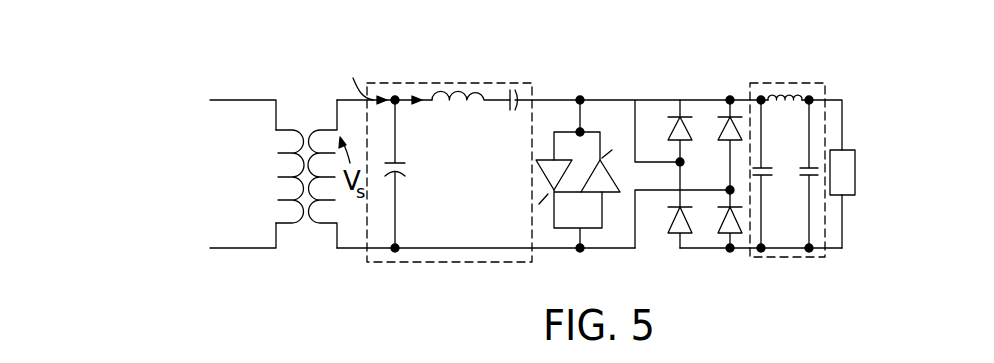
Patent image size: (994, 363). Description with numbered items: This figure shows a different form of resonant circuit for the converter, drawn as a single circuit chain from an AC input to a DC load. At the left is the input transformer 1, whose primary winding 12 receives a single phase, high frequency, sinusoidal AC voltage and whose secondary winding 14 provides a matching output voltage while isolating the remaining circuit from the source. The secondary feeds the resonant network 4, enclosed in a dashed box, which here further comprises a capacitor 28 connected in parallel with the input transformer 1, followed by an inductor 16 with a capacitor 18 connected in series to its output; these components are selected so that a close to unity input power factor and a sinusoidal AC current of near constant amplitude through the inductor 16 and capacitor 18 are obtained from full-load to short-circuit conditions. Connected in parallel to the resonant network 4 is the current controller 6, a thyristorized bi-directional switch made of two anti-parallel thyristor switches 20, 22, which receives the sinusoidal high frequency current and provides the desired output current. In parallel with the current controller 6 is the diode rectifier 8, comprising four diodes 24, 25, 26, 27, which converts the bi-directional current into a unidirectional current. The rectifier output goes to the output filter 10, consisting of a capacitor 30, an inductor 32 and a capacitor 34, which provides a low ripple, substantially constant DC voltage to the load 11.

The input transformer 1 is at (273, 176).
The primary winding 12 is at (283, 149).
The secondary winding 14 is at (322, 140).
The resonant network 4 is at (476, 173).
The capacitor 28 is at (387, 176).
The inductor 16 is at (432, 96).
The capacitor 18 is at (509, 91).
The current controller 6 is at (566, 172).
The thyristor switch 20 is at (543, 152).
The thyristor switch 22 is at (597, 165).
The diode rectifier 8 is at (711, 172).
The diode 24 is at (657, 128).
The diode 25 is at (670, 216).
The diode 27 is at (725, 220).
The diode 26 is at (782, 166).
The inductor 32 is at (786, 96).
The capacitor 30 is at (764, 175).
The capacitor 34 is at (808, 178).
The output filter 10 is at (841, 185).
The load 11 is at (853, 197).